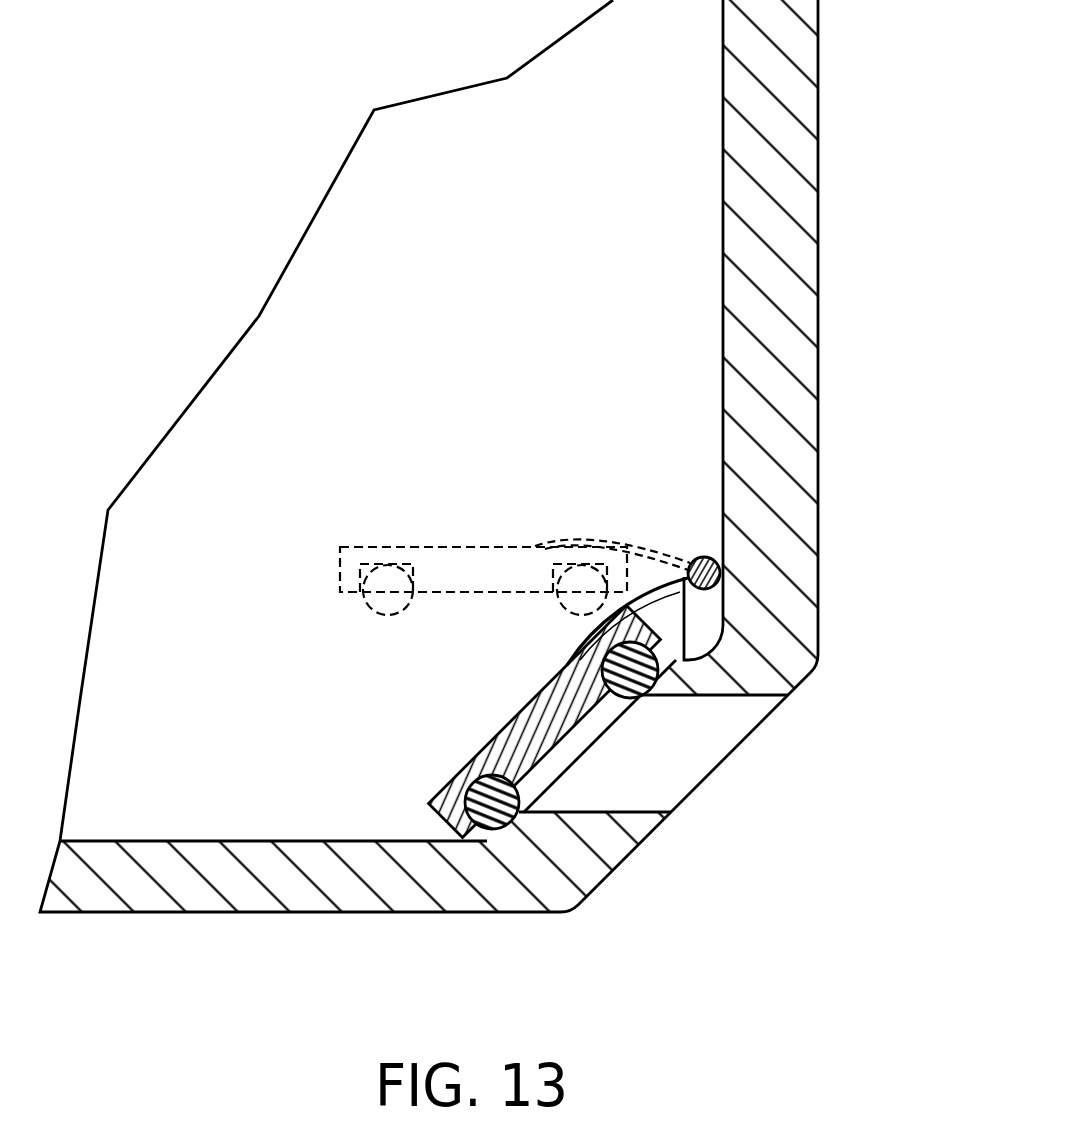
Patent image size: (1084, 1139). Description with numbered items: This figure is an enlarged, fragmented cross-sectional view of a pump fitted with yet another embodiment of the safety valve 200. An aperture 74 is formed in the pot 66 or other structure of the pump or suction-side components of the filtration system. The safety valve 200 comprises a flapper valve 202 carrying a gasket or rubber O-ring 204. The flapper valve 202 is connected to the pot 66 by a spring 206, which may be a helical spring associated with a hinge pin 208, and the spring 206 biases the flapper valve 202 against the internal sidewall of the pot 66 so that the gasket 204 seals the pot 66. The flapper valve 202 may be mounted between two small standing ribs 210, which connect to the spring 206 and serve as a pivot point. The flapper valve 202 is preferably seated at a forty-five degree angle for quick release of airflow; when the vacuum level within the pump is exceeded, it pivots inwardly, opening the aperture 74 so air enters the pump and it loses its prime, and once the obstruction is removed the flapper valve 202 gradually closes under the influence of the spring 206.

The pot 66 is at (813, 408).
The aperture 74 is at (662, 748).
The safety valve 200 is at (478, 629).
The flapper valve 202 is at (435, 545).
The gasket or rubber O-ring 204 is at (387, 597).
The spring 206 is at (565, 542).
The hinge pin 208 is at (712, 566).
The standing ribs 210 is at (703, 617).